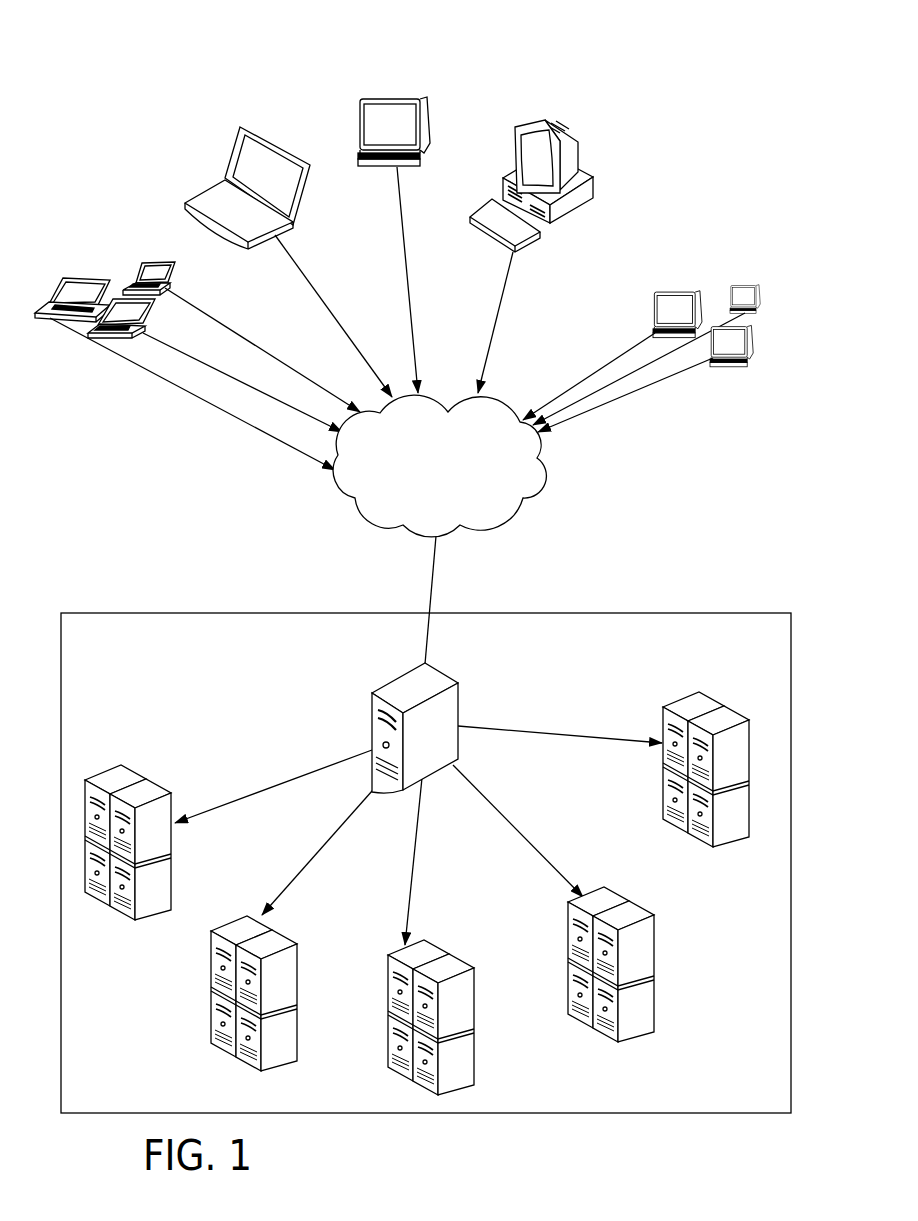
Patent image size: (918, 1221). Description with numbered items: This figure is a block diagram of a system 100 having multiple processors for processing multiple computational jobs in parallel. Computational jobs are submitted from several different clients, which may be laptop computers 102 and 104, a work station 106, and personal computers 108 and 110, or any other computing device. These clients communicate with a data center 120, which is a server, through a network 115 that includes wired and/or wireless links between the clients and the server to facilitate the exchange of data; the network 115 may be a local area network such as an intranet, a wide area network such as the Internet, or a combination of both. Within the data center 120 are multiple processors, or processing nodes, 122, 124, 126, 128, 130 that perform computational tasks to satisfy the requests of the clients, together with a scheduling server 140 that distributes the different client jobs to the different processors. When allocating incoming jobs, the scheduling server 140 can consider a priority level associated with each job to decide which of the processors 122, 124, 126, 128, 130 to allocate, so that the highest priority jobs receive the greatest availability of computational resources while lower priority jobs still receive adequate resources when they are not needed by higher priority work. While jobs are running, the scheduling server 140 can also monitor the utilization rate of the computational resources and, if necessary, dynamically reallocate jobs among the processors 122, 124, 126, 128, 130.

The system 100 is at (718, 115).
The laptop computer 102 is at (127, 287).
The laptop computer 104 is at (215, 183).
The work station 106 is at (358, 130).
The personal computer 108 is at (543, 123).
The personal computer 110 is at (682, 290).
The network 115 is at (500, 527).
The data center 120 is at (234, 613).
The processor 122 is at (167, 907).
The processor 124 is at (250, 1070).
The processor 126 is at (478, 1032).
The processor 128 is at (660, 945).
The processor 130 is at (698, 690).
The scheduling server 140 is at (372, 672).